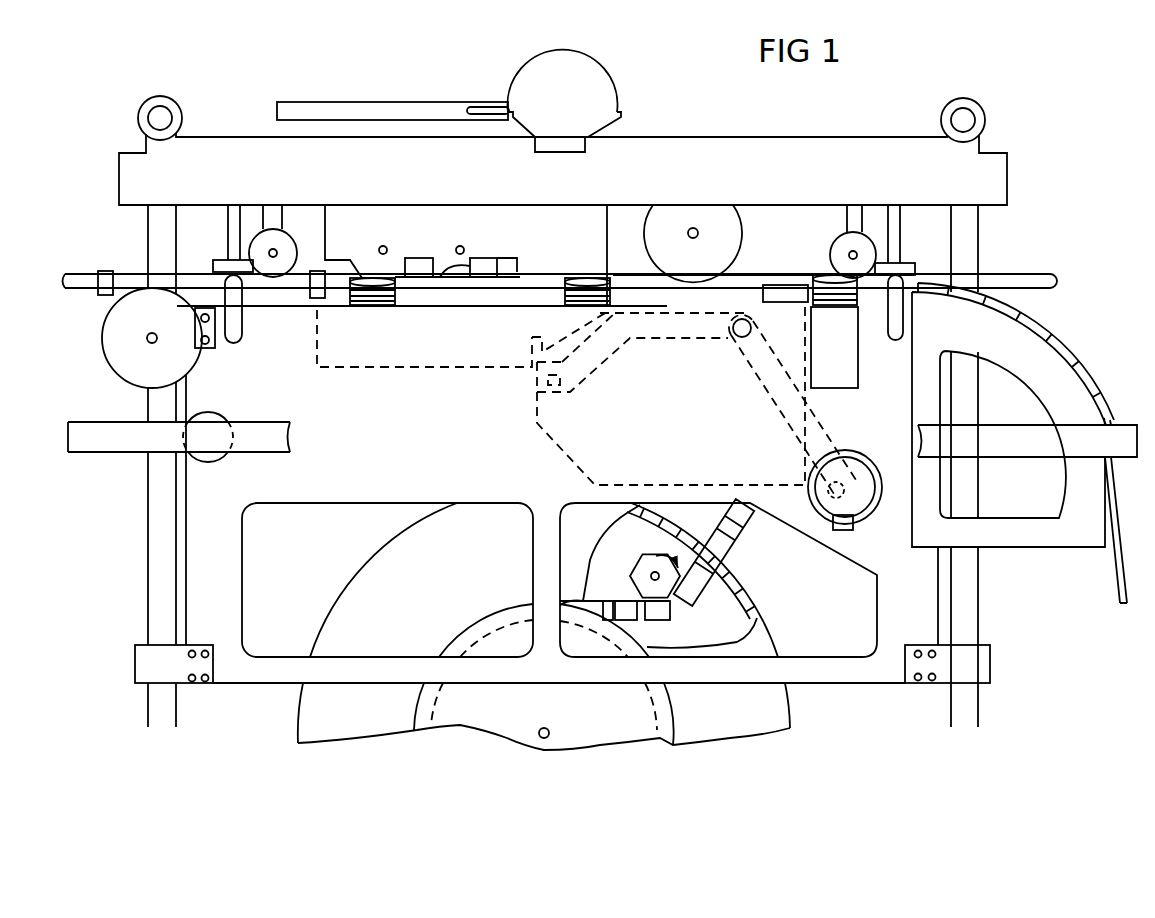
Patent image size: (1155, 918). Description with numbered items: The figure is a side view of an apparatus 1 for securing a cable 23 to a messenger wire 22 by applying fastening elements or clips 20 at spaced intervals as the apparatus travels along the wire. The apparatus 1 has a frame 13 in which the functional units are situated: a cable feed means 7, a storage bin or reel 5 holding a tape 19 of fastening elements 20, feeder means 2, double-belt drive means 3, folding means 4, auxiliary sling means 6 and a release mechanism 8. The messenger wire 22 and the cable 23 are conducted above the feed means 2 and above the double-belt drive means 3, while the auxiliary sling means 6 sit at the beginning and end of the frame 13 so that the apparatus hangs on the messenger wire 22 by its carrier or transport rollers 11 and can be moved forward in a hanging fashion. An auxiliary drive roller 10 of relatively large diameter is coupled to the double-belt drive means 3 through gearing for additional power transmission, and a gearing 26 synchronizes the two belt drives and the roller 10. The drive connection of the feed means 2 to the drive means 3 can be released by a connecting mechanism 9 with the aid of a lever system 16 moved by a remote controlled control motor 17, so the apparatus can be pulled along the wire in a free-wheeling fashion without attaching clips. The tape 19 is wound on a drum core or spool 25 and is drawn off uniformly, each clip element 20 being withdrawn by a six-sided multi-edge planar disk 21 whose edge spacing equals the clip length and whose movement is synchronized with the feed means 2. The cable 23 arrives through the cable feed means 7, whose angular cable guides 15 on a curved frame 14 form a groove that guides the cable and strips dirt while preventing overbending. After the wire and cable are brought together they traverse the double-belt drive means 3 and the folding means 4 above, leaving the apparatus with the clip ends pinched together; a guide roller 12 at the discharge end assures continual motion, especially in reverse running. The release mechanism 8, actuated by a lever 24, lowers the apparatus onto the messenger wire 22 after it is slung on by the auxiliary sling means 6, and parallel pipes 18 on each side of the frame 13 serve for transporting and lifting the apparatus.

The apparatus 1 is at (205, 530).
The feeder means 2 is at (553, 451).
The double-belt drive means 3 is at (407, 373).
The folding means 4 is at (567, 217).
The storage bin or reel 5 is at (368, 588).
The auxiliary sling means 6 is at (250, 327).
The cable feed means 7 is at (1033, 530).
The release mechanism 8 is at (616, 85).
The connecting mechanism 9 is at (870, 518).
The auxiliary drive roller 10 is at (731, 249).
The carrier or transport rollers 11 is at (283, 246).
The guide roller 12 is at (125, 365).
The frame 13 is at (161, 513).
The curved frame 14 is at (1050, 378).
The cable guides 15 is at (1035, 328).
The lever system 16 is at (812, 437).
The control motor 17 is at (862, 466).
The parallel pipes 18 is at (92, 446).
The tape 19 is at (737, 546).
The fastening elements or clips 20 is at (103, 297).
The multi-edge planar disk 21 is at (648, 566).
The messenger wire 22 is at (83, 268).
The cable 23 is at (1118, 580).
The lever 24 is at (400, 103).
The drum core or spool 25 is at (460, 719).
The gearing 26 is at (855, 373).